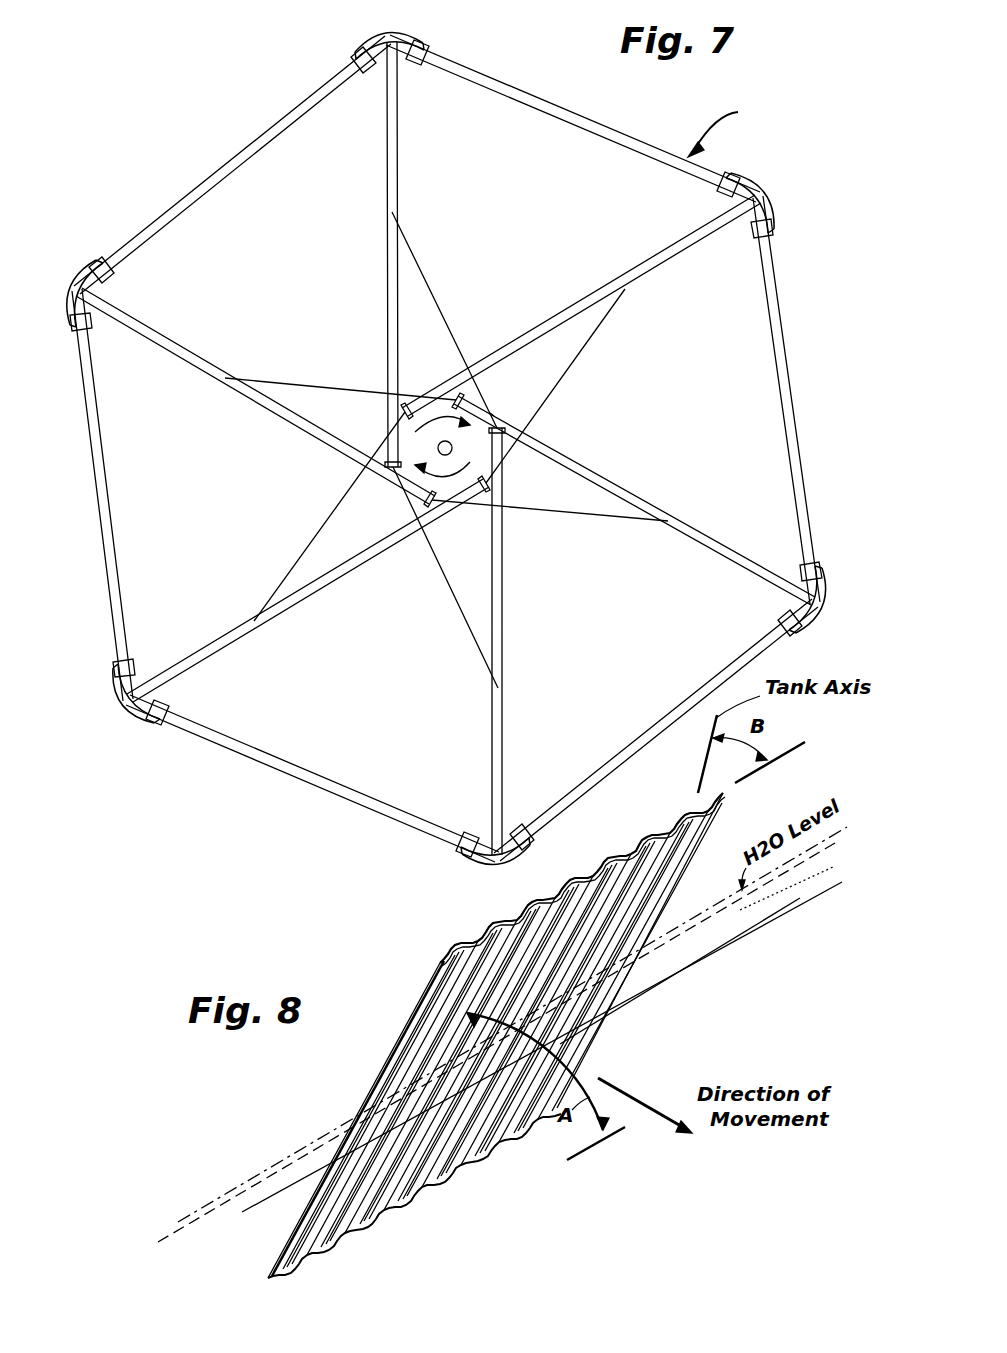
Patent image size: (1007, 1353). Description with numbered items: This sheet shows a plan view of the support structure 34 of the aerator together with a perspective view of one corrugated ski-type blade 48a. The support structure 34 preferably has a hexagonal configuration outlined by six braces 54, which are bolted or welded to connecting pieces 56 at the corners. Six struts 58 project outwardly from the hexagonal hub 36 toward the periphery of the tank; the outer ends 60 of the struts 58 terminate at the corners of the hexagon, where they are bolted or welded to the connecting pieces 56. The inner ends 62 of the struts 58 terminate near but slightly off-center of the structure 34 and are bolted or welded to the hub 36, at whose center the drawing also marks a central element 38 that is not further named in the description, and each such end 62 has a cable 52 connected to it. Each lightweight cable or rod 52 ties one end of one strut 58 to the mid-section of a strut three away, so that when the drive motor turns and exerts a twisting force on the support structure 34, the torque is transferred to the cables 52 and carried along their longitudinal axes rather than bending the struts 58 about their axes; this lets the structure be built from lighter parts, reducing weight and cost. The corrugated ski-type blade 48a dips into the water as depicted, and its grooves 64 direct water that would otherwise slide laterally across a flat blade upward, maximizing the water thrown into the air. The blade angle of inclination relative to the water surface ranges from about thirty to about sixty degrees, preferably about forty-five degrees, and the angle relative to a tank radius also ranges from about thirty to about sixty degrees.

In FIG. 7, the support structure 34 is at (728, 125).
In FIG. 7, the hexagonal hub 36 is at (492, 419).
In FIG. 7, the hub 38 is at (449, 441).
In FIG. 7, the cables or rods 52 is at (452, 299).
In FIG. 7, the braces 54 is at (588, 119).
In FIG. 7, the connecting pieces 56 is at (364, 53).
In FIG. 7, the struts 58 is at (401, 167).
In FIG. 7, the ends of struts 60 is at (402, 83).
In FIG. 7, the ends of struts 62 is at (415, 405).
In FIG. 8, the corrugated ski-type blade 48a is at (496, 1035).
In FIG. 8, the grooves 64 is at (520, 1111).